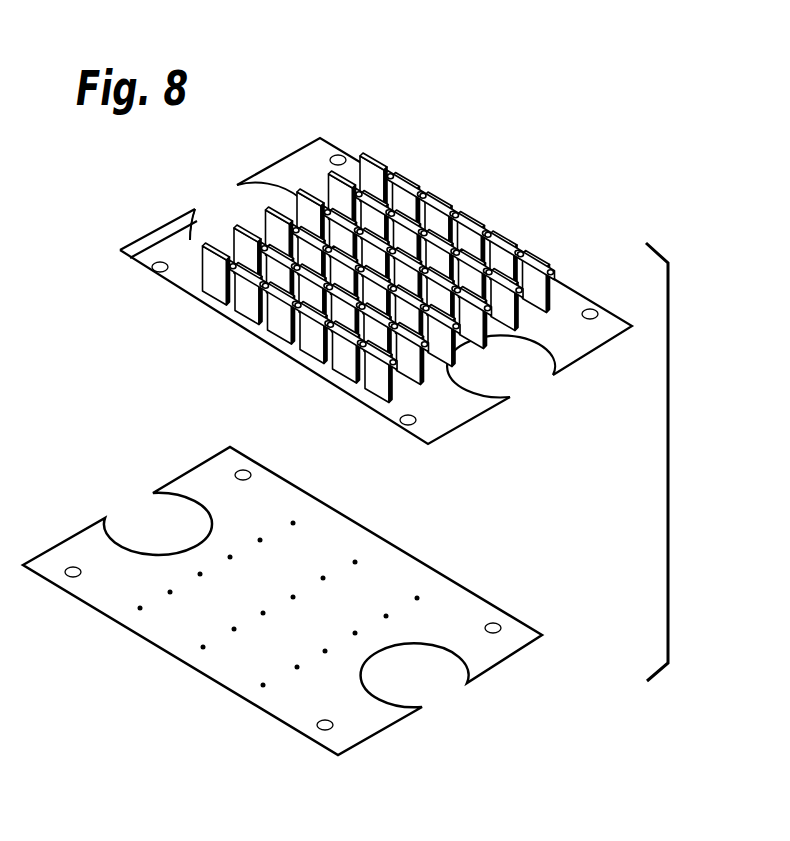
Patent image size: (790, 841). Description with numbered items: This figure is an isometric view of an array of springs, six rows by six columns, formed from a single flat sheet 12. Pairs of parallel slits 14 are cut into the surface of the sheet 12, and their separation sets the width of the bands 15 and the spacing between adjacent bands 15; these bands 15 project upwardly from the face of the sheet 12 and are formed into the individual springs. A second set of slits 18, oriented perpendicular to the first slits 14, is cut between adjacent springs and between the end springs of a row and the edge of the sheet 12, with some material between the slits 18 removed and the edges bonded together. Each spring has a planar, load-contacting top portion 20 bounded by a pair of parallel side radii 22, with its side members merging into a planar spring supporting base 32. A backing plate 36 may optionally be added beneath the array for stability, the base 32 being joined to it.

The sheet 12 is at (566, 298).
The parallel slits 14 is at (412, 370).
The bands 15 is at (270, 334).
The slits 18 is at (510, 397).
The top portion 20 is at (366, 156).
The side radii 22 is at (195, 209).
The spring supporting base 32 is at (444, 419).
The backing plate 36 is at (395, 571).